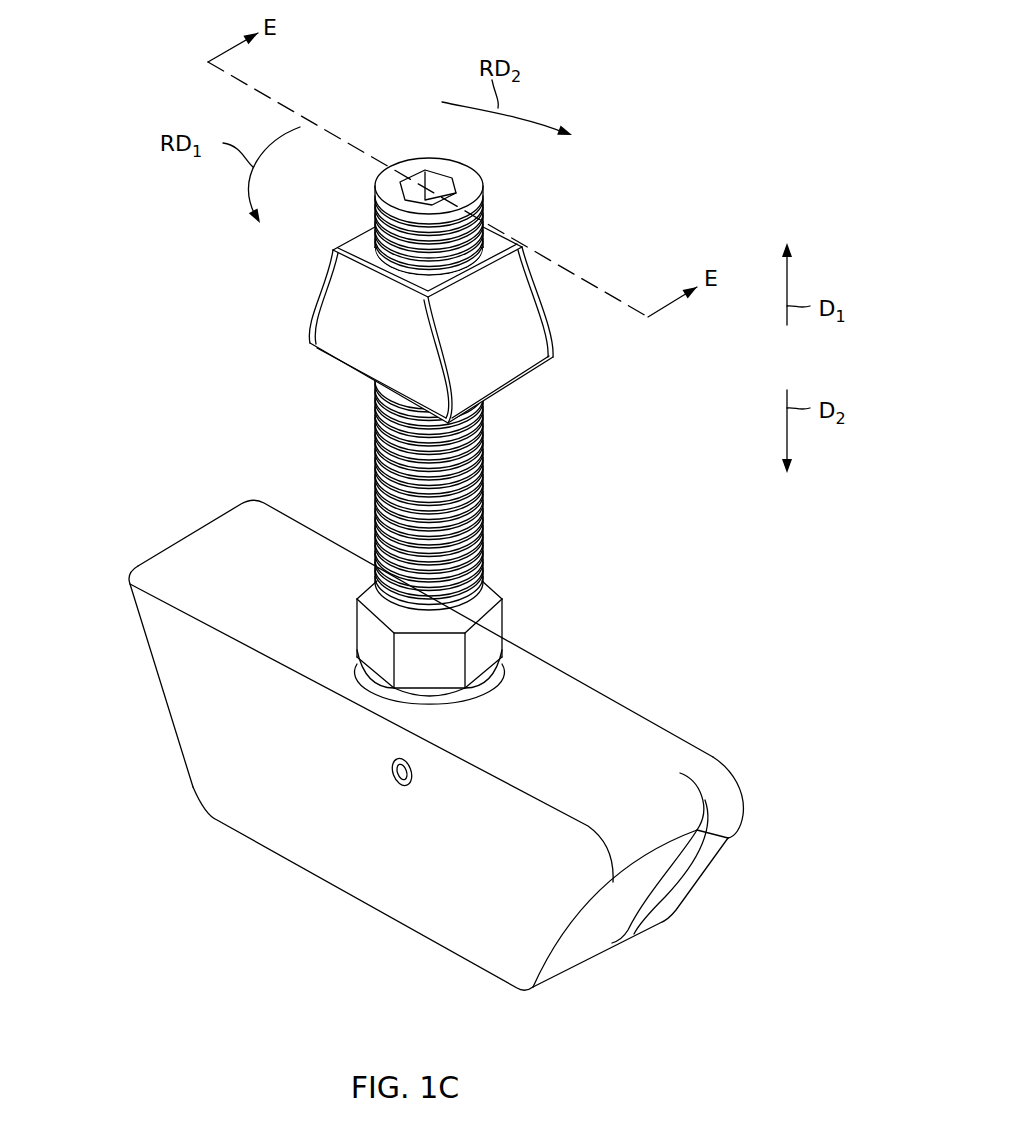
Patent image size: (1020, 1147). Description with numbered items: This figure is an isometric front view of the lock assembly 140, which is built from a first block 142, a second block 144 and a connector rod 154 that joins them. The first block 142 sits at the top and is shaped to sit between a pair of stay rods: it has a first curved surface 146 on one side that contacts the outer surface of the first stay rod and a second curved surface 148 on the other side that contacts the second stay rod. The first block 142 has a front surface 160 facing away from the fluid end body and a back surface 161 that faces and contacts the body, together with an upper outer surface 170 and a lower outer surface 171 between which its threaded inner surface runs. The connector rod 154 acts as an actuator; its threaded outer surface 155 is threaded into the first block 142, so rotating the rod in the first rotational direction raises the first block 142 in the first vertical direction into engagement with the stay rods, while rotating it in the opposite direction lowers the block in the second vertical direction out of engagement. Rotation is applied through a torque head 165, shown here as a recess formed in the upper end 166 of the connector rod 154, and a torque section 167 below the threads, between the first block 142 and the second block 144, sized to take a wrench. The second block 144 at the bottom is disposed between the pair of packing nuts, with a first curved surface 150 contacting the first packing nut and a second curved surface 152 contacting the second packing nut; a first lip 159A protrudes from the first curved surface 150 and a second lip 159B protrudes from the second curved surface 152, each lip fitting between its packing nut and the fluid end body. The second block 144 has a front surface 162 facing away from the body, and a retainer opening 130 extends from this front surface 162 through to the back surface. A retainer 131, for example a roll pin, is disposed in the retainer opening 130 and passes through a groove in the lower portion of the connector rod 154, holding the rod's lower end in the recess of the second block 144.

The lock assembly 140 is at (720, 70).
The first block 142 is at (548, 299).
The second block 144 is at (680, 706).
The first curved surface 146 is at (323, 287).
The second curved surface 148 is at (507, 347).
The first curved surface 150 is at (172, 727).
The second curved surface 152 is at (592, 923).
The connector rod 154 is at (515, 630).
The threaded outer surface 155 is at (403, 447).
The first lip 159A is at (240, 518).
The second lip 159B is at (690, 847).
The front surface 160 is at (340, 320).
The back surface 161 is at (518, 243).
The front surface 162 is at (612, 697).
The torque head 165 is at (438, 178).
The upper end 166 is at (472, 185).
The torque section 167 is at (370, 633).
The upper outer surface 170 is at (358, 247).
The lower outer surface 171 is at (333, 367).
The retainer opening 130 is at (413, 772).
The retainer 131 is at (403, 785).